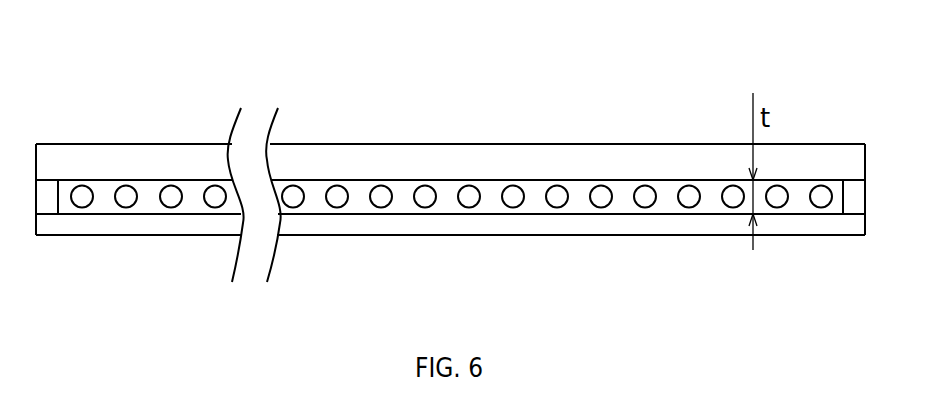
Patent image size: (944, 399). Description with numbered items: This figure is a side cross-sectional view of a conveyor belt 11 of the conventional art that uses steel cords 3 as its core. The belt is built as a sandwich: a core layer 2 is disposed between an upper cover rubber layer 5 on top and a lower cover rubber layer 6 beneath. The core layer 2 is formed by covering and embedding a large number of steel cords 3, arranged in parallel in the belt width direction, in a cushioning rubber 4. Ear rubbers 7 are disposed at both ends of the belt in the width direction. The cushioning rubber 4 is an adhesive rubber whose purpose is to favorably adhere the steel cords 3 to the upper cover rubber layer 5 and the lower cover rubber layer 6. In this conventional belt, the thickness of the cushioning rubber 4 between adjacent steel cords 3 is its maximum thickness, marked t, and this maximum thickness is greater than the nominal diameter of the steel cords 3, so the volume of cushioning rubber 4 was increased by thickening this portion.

The conveyor belt 11 is at (698, 145).
The upper cover rubber layer 5 is at (383, 157).
The lower cover rubber layer 6 is at (403, 225).
The core layer 2 is at (603, 179).
The steel cords 3 is at (172, 193).
The cushioning rubber 4 is at (106, 190).
The ear rubbers 7 is at (47, 200).